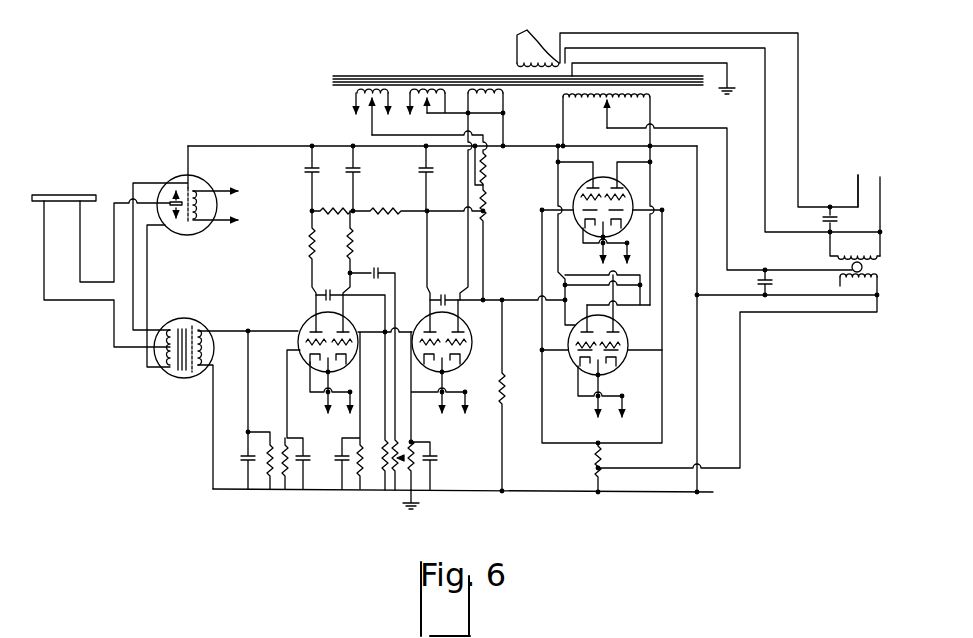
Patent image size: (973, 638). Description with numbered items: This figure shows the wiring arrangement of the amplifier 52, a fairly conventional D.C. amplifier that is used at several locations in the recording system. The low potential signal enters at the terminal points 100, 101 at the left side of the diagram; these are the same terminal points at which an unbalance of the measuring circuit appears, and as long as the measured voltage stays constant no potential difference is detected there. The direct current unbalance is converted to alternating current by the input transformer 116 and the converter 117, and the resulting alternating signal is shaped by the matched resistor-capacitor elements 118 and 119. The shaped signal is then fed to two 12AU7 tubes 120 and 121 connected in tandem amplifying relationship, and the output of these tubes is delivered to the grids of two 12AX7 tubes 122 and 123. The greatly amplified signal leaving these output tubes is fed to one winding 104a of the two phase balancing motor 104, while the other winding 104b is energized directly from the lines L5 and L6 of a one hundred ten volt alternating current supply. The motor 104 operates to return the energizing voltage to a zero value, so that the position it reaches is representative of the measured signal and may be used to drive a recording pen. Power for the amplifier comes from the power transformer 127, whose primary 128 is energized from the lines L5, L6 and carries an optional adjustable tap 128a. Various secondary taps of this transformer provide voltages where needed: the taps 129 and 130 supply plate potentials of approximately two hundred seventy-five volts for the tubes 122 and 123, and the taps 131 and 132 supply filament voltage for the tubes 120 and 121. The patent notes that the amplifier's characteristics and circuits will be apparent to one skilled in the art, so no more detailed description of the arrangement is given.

The amplifier 52 is at (309, 118).
The terminal point 100 is at (44, 195).
The terminal point 101 is at (85, 189).
The balancing motor 104 is at (864, 267).
The motor winding 104a is at (846, 284).
The motor winding 104b is at (862, 256).
The input transformer 116 is at (189, 319).
The converter 117 is at (195, 236).
The resistor-capacitor element 118 is at (268, 462).
The resistor-capacitor element 119 is at (244, 459).
The 12AU7 tube 120 is at (298, 342).
The 12AU7 tube 121 is at (470, 352).
The 12AX7 tube 122 is at (575, 188).
The 12AX7 tube 123 is at (628, 356).
The power transformer 127 is at (478, 74).
The primary 128 is at (516, 40).
The adjustable tap 128a is at (562, 44).
The secondary tap 129 is at (586, 99).
The secondary tap 130 is at (634, 99).
The secondary tap 131 is at (355, 97).
The secondary tap 132 is at (423, 108).
The supply line L5 is at (856, 180).
The supply line L6 is at (886, 180).